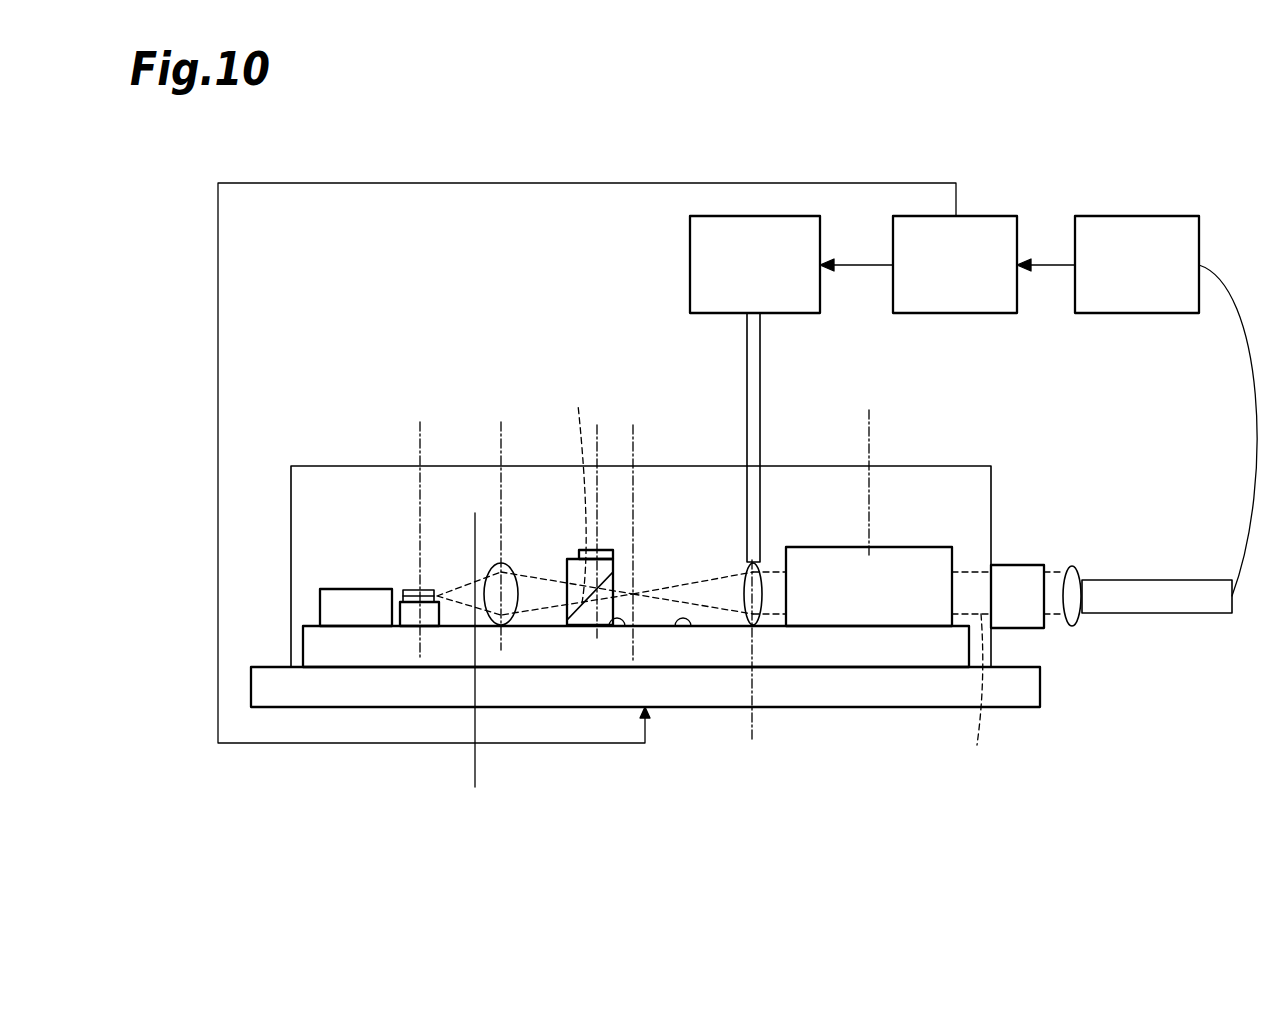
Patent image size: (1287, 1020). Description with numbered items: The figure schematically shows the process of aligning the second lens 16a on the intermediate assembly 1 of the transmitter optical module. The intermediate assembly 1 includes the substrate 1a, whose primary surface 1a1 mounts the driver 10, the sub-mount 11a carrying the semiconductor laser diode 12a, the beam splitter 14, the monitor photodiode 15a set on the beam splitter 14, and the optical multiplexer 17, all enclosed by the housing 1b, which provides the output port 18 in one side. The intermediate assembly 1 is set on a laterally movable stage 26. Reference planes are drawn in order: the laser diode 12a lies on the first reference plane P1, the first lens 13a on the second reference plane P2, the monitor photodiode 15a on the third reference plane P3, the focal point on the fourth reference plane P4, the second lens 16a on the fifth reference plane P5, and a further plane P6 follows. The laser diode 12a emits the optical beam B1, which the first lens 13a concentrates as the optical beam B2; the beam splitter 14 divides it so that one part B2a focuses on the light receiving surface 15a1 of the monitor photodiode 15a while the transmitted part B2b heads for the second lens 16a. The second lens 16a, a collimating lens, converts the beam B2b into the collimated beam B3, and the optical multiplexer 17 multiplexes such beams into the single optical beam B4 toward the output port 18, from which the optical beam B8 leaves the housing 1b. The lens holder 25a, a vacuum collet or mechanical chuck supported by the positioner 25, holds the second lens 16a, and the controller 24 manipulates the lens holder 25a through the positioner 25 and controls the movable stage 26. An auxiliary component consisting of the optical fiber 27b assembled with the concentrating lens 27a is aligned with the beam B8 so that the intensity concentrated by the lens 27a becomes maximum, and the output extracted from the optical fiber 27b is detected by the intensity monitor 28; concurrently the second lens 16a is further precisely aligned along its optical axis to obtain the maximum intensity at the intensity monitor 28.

The intermediate assembly 1 is at (1010, 439).
The substrate 1a is at (348, 648).
The primary surface 1a1 is at (683, 626).
The housing 1b is at (991, 487).
The driver 10 is at (352, 597).
The sub-mount 11a is at (415, 615).
The semiconductor laser diode 12a is at (422, 593).
The first lens 13a is at (502, 565).
The beam splitter 14 is at (617, 626).
The monitor photodiode 15a is at (613, 549).
The light receiving surface 15a1 is at (583, 567).
The second lens 16a is at (745, 590).
The optical multiplexer 17 is at (932, 547).
The output port 18 is at (1017, 565).
The controller 24 is at (993, 216).
The positioner 25 is at (690, 257).
The lens holder 25a is at (760, 340).
The movable stage 26 is at (287, 697).
The concentrating lens 27a is at (1073, 628).
The optical fiber 27b is at (1200, 615).
The intensity monitor 28 is at (1137, 216).
The optical beam B1 is at (459, 614).
The optical beam B2 is at (518, 625).
The optical beam B2a is at (577, 488).
The optical beam B2b is at (720, 606).
The collimated beam B3 is at (776, 572).
The single optical beam B4 is at (977, 693).
The optical beam B8 is at (1055, 617).
The first reference plane P1 is at (420, 432).
The second reference plane P2 is at (501, 432).
The third reference plane P3 is at (597, 425).
The fourth reference plane P4 is at (633, 425).
The fifth reference plane P5 is at (752, 732).
The sixth reference plane P6 is at (869, 420).